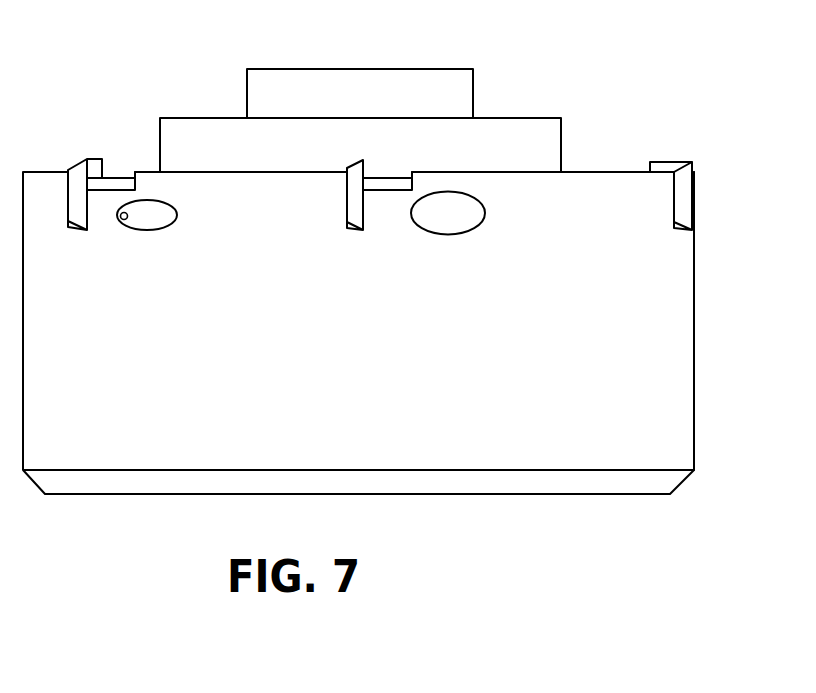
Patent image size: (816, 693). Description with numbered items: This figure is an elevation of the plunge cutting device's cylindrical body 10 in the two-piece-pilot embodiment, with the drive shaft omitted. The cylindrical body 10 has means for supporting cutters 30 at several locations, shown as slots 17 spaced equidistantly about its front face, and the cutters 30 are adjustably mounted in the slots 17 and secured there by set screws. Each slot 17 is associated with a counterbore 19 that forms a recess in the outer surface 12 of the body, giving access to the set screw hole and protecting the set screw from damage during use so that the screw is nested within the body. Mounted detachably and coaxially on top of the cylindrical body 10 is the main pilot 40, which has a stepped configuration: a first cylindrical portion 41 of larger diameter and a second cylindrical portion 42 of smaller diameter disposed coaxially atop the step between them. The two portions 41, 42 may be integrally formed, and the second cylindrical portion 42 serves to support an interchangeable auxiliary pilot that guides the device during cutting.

The cylindrical body 10 is at (695, 263).
The outer surface 12 is at (650, 338).
The slot 17 is at (353, 230).
The counterbore 19 is at (473, 193).
The cutter 30 is at (97, 157).
The main pilot 40 is at (373, 103).
The first cylindrical portion 41 is at (160, 138).
The second cylindrical portion 42 is at (247, 99).